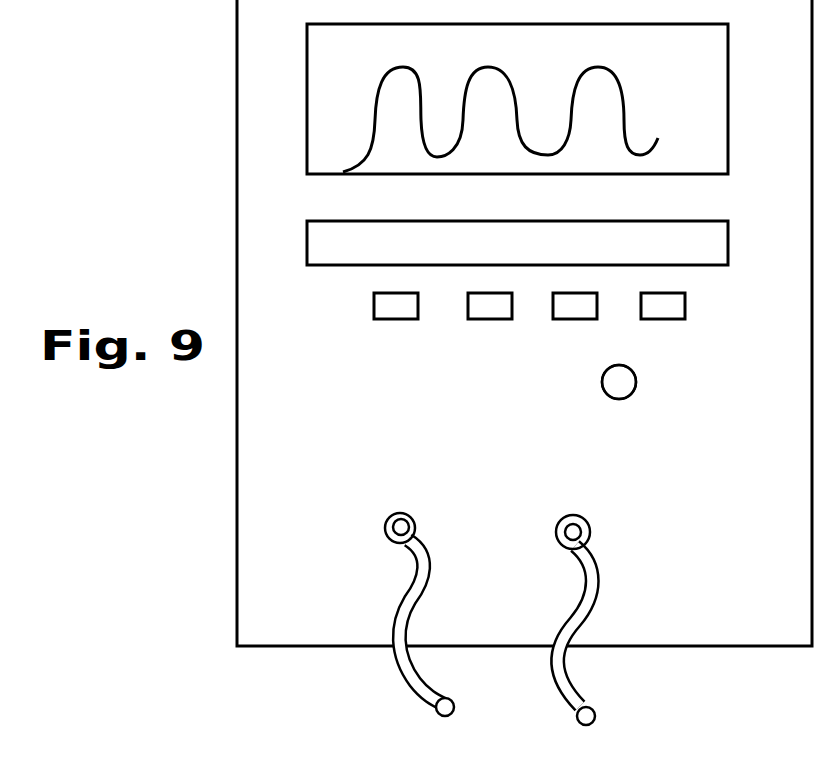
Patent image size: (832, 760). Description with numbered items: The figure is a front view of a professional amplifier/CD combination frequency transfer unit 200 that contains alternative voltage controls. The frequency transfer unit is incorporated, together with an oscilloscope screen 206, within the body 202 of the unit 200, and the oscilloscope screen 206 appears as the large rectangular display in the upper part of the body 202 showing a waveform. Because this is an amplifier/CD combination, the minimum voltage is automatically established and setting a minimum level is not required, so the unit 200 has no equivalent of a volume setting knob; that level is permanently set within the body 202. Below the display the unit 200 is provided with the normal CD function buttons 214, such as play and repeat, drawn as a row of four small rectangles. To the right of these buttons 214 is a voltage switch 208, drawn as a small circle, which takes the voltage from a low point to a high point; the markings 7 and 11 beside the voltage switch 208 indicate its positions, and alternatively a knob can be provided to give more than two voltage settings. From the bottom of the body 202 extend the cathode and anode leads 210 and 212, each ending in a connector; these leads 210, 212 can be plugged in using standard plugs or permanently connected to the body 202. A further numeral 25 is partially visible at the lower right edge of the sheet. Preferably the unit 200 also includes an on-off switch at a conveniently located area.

The unit 200 is at (180, 555).
The body 202 is at (265, 432).
The oscilloscope screen 206 is at (328, 102).
The CD function buttons 214 is at (393, 308).
The voltage switch 208 is at (628, 382).
The knob position indicator 7 is at (619, 365).
The knob position indicator 11 is at (621, 400).
The cathode lead 210 is at (437, 700).
The anode lead 212 is at (597, 712).
The partially visible numeral 25 is at (817, 744).